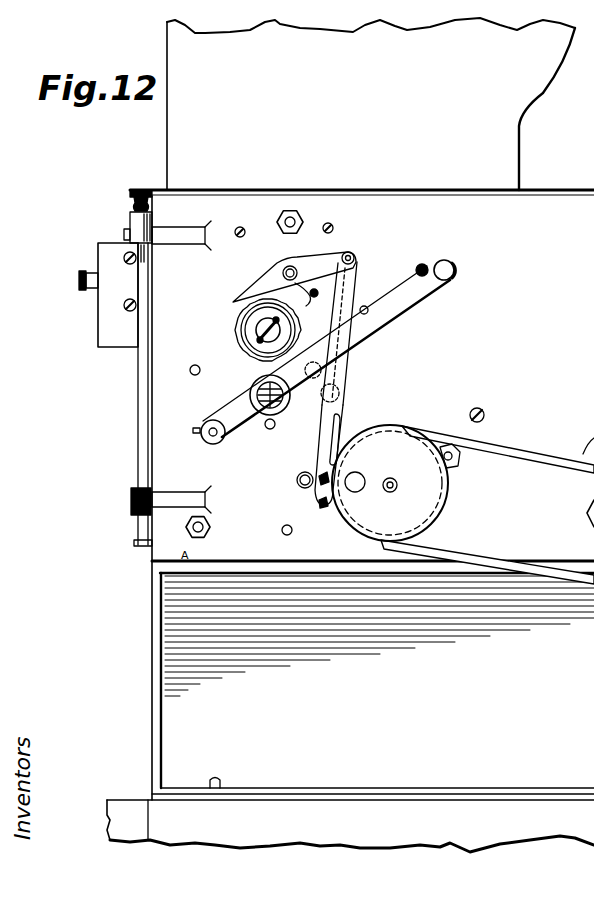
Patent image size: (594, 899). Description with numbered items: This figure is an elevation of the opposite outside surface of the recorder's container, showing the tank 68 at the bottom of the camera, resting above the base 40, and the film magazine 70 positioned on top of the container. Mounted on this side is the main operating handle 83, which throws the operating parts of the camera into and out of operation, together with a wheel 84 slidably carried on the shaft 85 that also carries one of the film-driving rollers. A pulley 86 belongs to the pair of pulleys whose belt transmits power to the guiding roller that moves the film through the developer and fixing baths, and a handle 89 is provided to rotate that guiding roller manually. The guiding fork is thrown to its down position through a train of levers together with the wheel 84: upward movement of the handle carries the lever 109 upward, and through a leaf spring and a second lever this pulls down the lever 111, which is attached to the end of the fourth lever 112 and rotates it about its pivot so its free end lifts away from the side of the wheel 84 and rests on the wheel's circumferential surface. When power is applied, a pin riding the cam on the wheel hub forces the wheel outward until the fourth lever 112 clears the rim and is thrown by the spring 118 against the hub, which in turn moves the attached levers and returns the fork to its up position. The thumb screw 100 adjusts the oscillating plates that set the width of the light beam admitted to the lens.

The film magazine 70 is at (523, 90).
The thumb screw 100 is at (82, 290).
The wheel 84 is at (244, 318).
The shaft 85 is at (277, 332).
The fourth lever 112 is at (333, 251).
The lever 111 is at (343, 284).
The spring 118 is at (313, 304).
The main operating handle 83 is at (405, 305).
The lever 109 is at (333, 406).
The handle 89 is at (359, 479).
The pulley 86 is at (432, 495).
The tank 68 is at (177, 703).
The base 40 is at (170, 817).